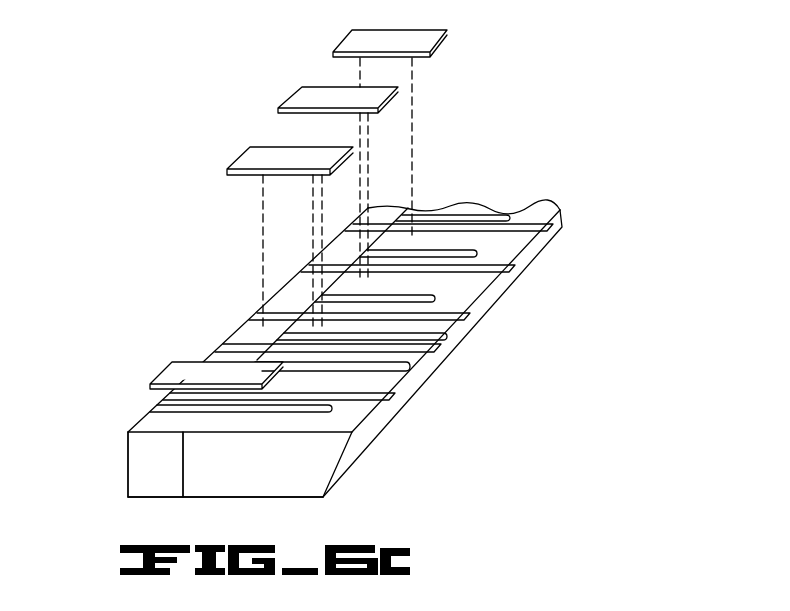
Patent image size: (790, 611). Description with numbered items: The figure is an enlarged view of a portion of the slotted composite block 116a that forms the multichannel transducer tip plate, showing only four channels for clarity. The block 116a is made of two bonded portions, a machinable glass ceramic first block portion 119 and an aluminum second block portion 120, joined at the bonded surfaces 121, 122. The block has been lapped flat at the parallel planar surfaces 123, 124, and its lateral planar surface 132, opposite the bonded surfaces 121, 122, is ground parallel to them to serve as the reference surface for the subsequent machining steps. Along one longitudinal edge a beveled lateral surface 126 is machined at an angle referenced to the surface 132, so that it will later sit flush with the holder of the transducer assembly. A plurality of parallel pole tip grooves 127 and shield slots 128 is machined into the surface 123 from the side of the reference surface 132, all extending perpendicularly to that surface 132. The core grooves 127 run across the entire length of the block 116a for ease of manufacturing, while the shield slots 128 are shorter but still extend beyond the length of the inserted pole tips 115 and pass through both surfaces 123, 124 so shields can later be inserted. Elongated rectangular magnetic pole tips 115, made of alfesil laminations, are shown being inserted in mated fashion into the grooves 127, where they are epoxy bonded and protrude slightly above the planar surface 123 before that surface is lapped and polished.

The pole tips 115 is at (347, 40).
The composite block 116a is at (250, 240).
The first block portion 119 is at (166, 470).
The second block portion 120 is at (267, 468).
The bonded surface 121 is at (408, 215).
The bonded surface 122 is at (377, 295).
The planar surface 123 is at (530, 215).
The planar surface 124 is at (262, 497).
The beveled lateral surface 126 is at (520, 266).
The pole tip grooves 127 is at (400, 380).
The shield slots 128 is at (275, 300).
The reference surface 132 is at (128, 468).